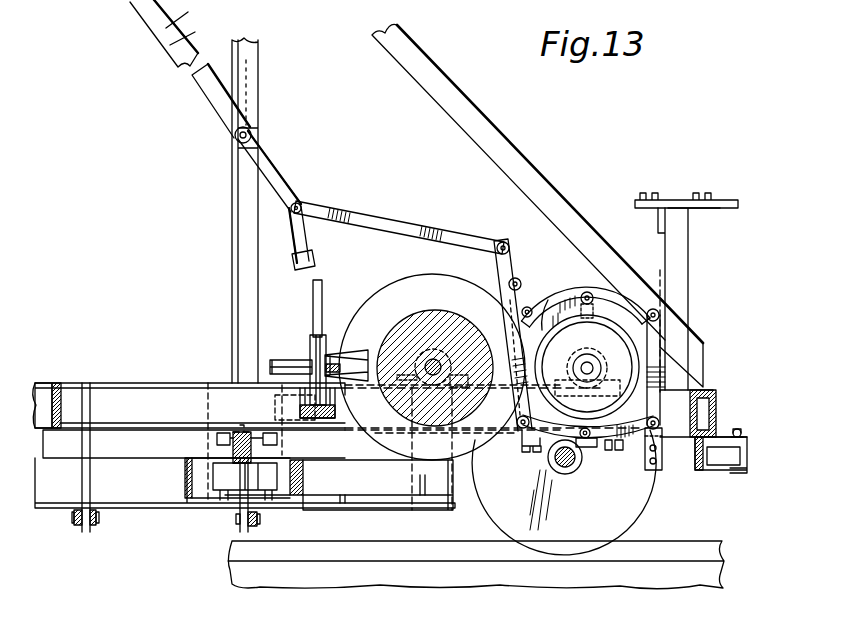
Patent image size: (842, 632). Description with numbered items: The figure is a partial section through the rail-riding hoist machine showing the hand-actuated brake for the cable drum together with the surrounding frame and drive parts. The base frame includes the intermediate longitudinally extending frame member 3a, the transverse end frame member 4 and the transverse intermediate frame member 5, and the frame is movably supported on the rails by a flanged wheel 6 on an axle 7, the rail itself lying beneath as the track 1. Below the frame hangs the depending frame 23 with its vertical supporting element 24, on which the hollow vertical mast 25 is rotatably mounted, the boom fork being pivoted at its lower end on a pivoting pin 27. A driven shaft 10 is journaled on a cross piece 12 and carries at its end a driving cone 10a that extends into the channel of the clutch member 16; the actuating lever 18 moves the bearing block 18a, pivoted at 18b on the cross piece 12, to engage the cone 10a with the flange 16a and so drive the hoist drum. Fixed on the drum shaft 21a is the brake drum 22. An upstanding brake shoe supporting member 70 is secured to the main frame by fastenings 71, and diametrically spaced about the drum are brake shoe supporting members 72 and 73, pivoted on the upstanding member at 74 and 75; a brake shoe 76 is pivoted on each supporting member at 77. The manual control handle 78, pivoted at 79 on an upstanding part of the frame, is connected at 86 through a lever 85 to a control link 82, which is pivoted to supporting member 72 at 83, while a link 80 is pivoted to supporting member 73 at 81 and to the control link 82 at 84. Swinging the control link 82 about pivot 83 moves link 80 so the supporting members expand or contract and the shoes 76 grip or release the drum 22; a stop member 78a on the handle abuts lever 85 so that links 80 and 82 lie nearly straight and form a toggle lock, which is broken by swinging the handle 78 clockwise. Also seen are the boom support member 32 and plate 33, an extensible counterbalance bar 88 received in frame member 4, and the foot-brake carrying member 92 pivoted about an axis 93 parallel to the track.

The ground 1 is at (411, 565).
The intermediate longitudinally extending frame member 3a is at (128, 388).
The transverse end frame member 4 is at (716, 396).
The transverse intermediate frame member 5 is at (188, 482).
The flanged wheel 6 is at (571, 492).
The axle 7 is at (560, 462).
The shaft 10 is at (283, 363).
The driving cone 10a is at (355, 362).
The cross piece 12 is at (50, 395).
The channeled clutch member 16 is at (400, 325).
The flange 16a is at (377, 305).
The actuating lever 18 is at (313, 294).
The bearing block 18a is at (314, 340).
The pivot 18b is at (276, 402).
The shaft 21a is at (587, 362).
The brake drum 22 is at (636, 355).
The depending frame 23 is at (145, 497).
The vertical supporting element 24 is at (43, 447).
The hollow vertical mast 25 is at (245, 448).
The pivoting pin 27 is at (216, 440).
The arm 32 is at (500, 138).
The plate 33 is at (236, 492).
The upstanding brake shoe supporting member 70 is at (668, 372).
The fastening 71 is at (657, 458).
The brake shoe supporting member 72 is at (556, 296).
The brake shoe supporting member 73 is at (620, 450).
The pivot 74 is at (660, 313).
The pivot 75 is at (650, 430).
The brake shoe 76 is at (601, 312).
The pivot 77 is at (588, 292).
The manual control handle 78 is at (205, 82).
The stop member 78a is at (312, 257).
The pivot 79 is at (252, 133).
The link 80 is at (512, 325).
The pivot 81 is at (519, 428).
The control link 82 is at (492, 265).
The pivot 83 is at (529, 308).
The pivot 84 is at (509, 286).
The lever 85 is at (382, 213).
The connection 86 is at (298, 203).
The extensible bar 88 is at (718, 408).
The brake shoe carrying member 92 is at (80, 530).
The axis 93 is at (72, 517).